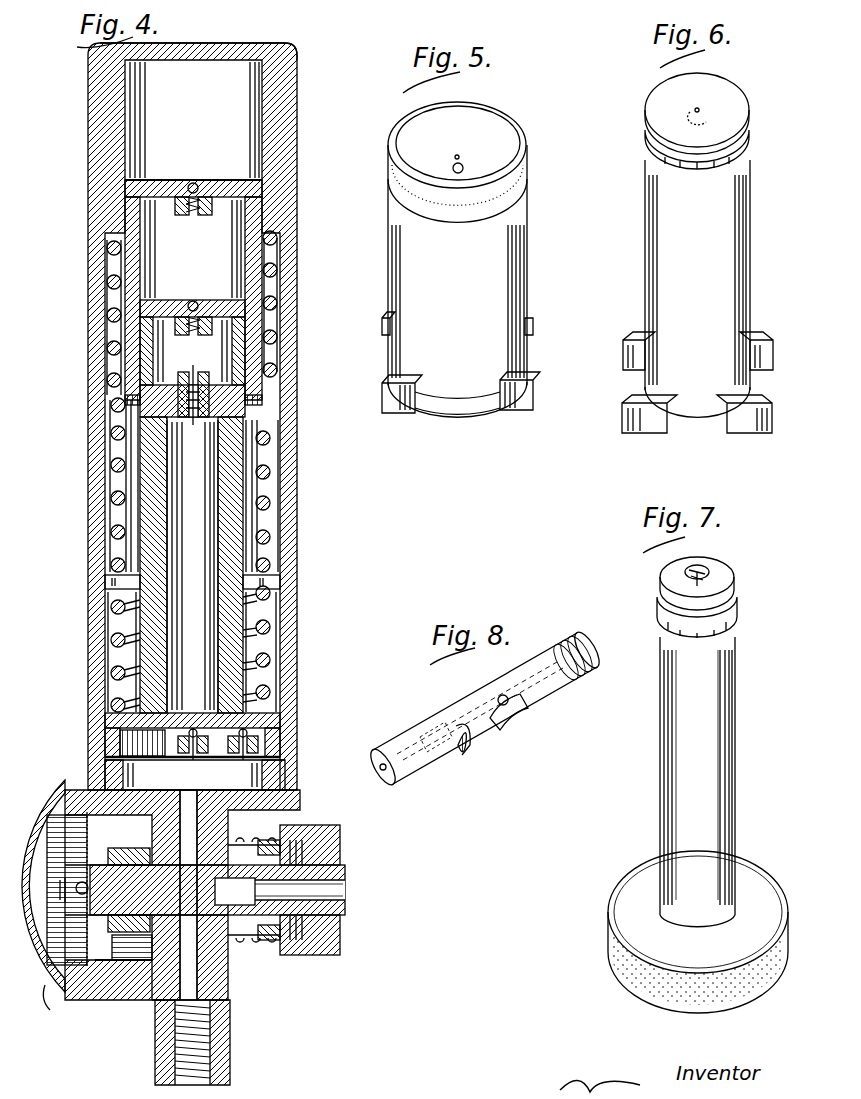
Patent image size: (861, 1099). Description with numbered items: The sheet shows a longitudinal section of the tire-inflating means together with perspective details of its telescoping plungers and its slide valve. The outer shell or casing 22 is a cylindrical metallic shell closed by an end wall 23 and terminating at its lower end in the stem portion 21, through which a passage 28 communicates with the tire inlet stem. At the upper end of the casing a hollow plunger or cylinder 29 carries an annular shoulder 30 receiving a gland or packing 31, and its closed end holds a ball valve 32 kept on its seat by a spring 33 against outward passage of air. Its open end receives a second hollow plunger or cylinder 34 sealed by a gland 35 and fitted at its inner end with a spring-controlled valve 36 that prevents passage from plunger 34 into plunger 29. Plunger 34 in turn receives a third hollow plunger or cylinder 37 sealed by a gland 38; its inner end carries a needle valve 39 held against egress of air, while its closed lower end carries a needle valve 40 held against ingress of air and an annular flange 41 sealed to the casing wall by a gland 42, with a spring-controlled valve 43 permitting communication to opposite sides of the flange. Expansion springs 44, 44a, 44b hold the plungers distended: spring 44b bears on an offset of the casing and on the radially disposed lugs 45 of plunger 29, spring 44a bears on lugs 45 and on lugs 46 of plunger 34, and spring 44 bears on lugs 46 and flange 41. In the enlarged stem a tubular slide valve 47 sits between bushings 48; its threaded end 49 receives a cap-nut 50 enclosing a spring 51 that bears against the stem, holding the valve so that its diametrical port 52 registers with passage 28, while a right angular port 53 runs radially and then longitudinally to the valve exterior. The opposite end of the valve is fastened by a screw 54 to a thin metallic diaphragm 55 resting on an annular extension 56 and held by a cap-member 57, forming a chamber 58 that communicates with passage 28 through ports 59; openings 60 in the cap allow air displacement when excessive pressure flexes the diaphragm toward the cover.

In FIG. 4, the stem portion 21 is at (232, 1068).
In FIG. 4, the outer shell or casing 22 is at (90, 448).
In FIG. 4, the end wall 23 is at (260, 46).
In FIG. 4, the passage 28 is at (200, 985).
In FIG. 4, the hollow plunger or cylinder 29 is at (268, 252).
In FIG. 5, the hollow plunger or cylinder 29 is at (524, 253).
In FIG. 4, the annular shoulder 30 is at (263, 195).
In FIG. 5, the annular shoulder 30 is at (510, 203).
In FIG. 4, the gland or packing 31 is at (263, 184).
In FIG. 5, the gland or packing 31 is at (525, 168).
In FIG. 4, the spring-controlled ball valve 32 is at (196, 184).
In FIG. 5, the spring-controlled ball valve 32 is at (467, 167).
In FIG. 4, the spring 33 is at (197, 216).
In FIG. 4, the second hollow plunger or cylinder 34 is at (240, 362).
In FIG. 6, the second hollow plunger or cylinder 34 is at (750, 237).
In FIG. 4, the gland 35 is at (258, 316).
In FIG. 6, the gland 35 is at (749, 150).
In FIG. 4, the spring-controlled valve 36 is at (196, 303).
In FIG. 6, the spring-controlled valve 36 is at (702, 118).
In FIG. 4, the third hollow plunger or cylinder 37 is at (228, 490).
In FIG. 7, the third hollow plunger or cylinder 37 is at (727, 712).
In FIG. 4, the gland 38 is at (248, 413).
In FIG. 4, the needle valve 39 is at (205, 380).
In FIG. 4, the spring-controlled needle valve 40 is at (197, 713).
In FIG. 4, the annular flange 41 is at (276, 716).
In FIG. 7, the annular flange 41 is at (652, 872).
In FIG. 4, the gland 42 is at (107, 731).
In FIG. 7, the gland 42 is at (765, 968).
In FIG. 4, the spring-controlled valve 43 is at (252, 730).
In FIG. 4, the expansion spring 44 is at (118, 640).
In FIG. 4, the expansion spring 44a is at (120, 532).
In FIG. 4, the expansion spring 44b is at (106, 250).
In FIG. 4, the radially disposed lugs 45 is at (143, 399).
In FIG. 5, the radially disposed lugs 45 is at (531, 383).
In FIG. 4, the radially disposed lugs 46 is at (106, 582).
In FIG. 6, the radially disposed lugs 46 is at (640, 402).
In FIG. 4, the tubular slide valve 47 is at (346, 874).
In FIG. 8, the tubular slide valve 47 is at (462, 700).
In FIG. 4, the bushings 48 is at (140, 866).
In FIG. 4, the threaded end 49 is at (348, 906).
In FIG. 8, the threaded end 49 is at (590, 668).
In FIG. 4, the cap-nut 50 is at (333, 828).
In FIG. 4, the spring 51 is at (264, 846).
In FIG. 4, the port 52 is at (163, 1001).
In FIG. 8, the port 52 is at (461, 756).
In FIG. 4, the right angular port 53 is at (253, 905).
In FIG. 8, the right angular port 53 is at (520, 712).
In FIG. 4, the screw 54 is at (82, 884).
In FIG. 4, the thin metallic diaphragm 55 is at (88, 924).
In FIG. 4, the annular extension 56 is at (120, 998).
In FIG. 4, the cap-member 57 is at (48, 792).
In FIG. 4, the chamber 58 is at (120, 962).
In FIG. 4, the ports 59 is at (160, 948).
In FIG. 4, the openings 60 is at (50, 1012).